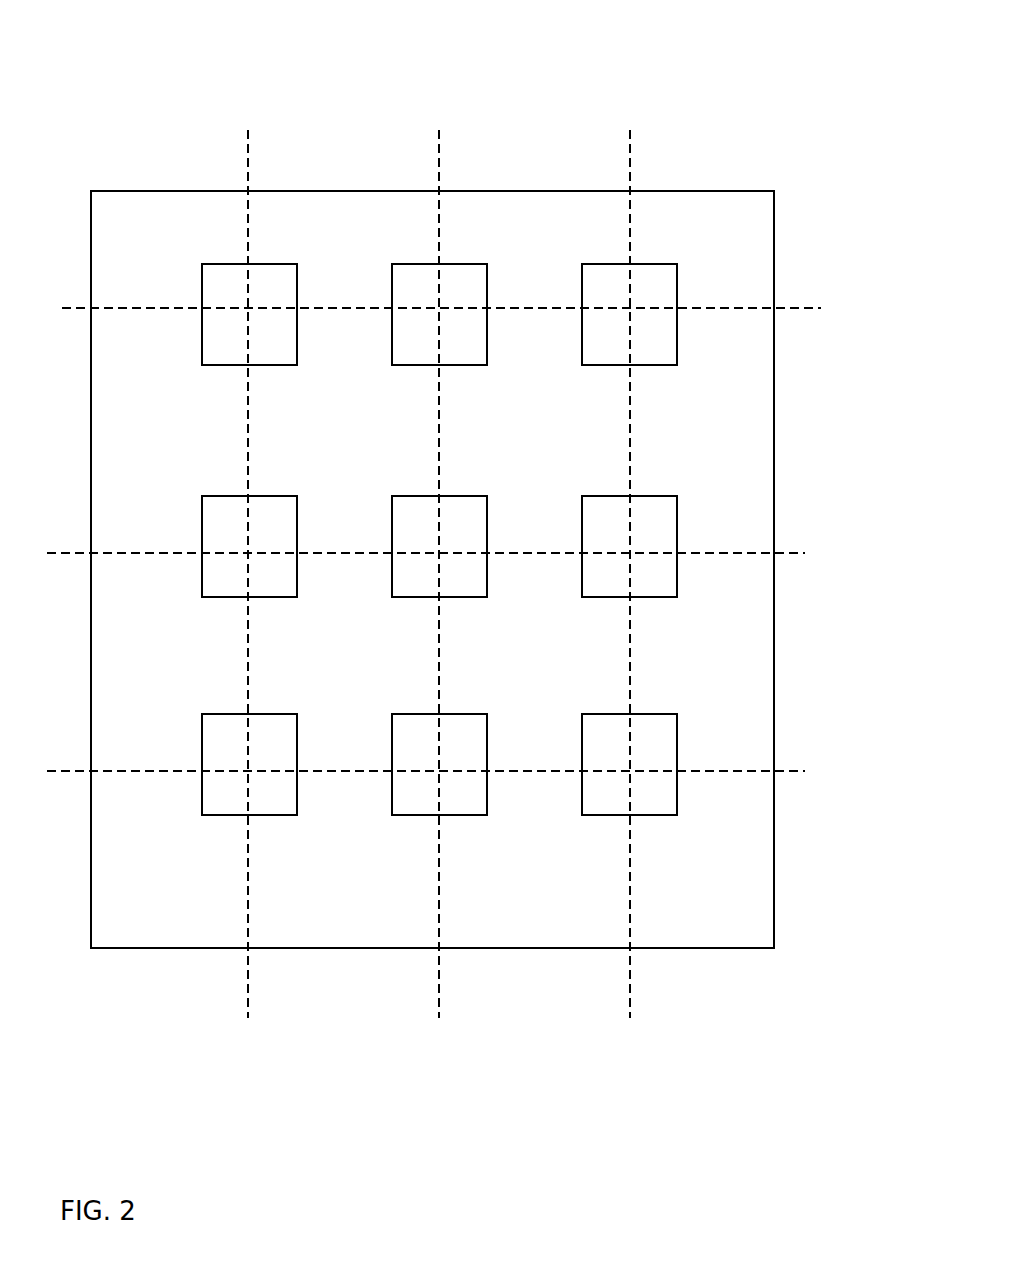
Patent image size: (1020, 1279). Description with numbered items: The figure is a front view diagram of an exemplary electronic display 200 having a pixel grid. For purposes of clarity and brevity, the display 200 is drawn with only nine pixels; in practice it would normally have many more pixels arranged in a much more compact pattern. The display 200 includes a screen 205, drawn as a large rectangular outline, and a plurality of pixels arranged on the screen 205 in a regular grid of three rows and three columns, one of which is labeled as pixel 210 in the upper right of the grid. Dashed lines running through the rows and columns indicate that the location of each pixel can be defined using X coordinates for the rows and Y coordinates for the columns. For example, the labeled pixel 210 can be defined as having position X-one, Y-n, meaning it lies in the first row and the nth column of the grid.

The electronic display 200 is at (480, 31).
The screen 205 is at (717, 951).
The pixel 210 is at (684, 270).